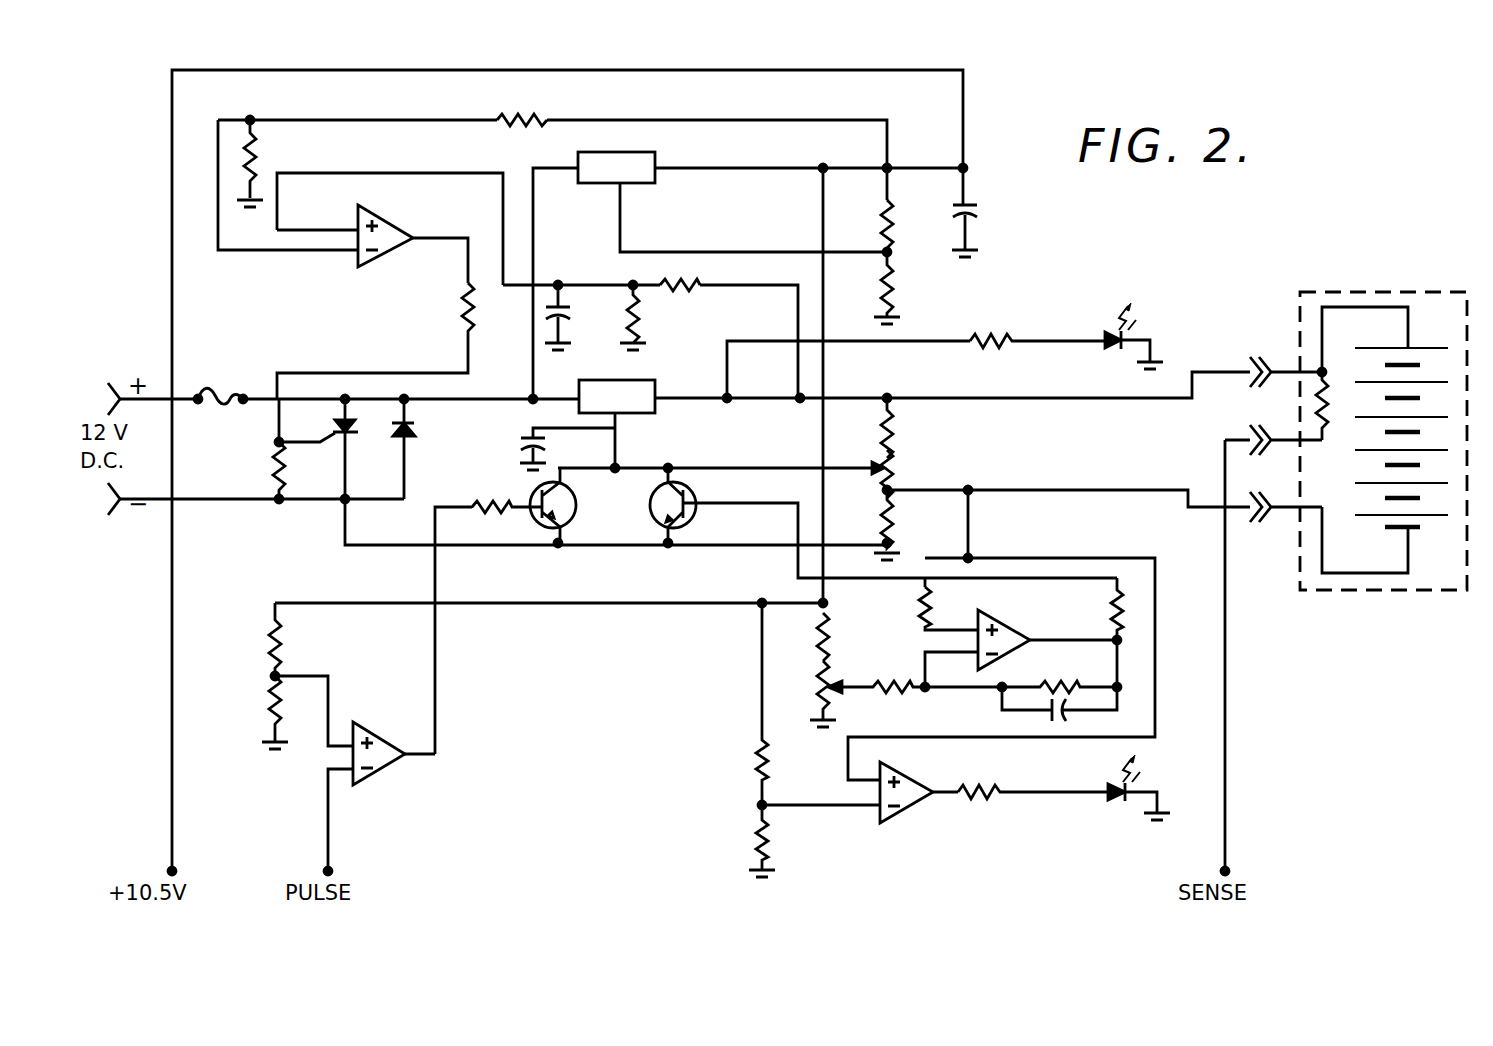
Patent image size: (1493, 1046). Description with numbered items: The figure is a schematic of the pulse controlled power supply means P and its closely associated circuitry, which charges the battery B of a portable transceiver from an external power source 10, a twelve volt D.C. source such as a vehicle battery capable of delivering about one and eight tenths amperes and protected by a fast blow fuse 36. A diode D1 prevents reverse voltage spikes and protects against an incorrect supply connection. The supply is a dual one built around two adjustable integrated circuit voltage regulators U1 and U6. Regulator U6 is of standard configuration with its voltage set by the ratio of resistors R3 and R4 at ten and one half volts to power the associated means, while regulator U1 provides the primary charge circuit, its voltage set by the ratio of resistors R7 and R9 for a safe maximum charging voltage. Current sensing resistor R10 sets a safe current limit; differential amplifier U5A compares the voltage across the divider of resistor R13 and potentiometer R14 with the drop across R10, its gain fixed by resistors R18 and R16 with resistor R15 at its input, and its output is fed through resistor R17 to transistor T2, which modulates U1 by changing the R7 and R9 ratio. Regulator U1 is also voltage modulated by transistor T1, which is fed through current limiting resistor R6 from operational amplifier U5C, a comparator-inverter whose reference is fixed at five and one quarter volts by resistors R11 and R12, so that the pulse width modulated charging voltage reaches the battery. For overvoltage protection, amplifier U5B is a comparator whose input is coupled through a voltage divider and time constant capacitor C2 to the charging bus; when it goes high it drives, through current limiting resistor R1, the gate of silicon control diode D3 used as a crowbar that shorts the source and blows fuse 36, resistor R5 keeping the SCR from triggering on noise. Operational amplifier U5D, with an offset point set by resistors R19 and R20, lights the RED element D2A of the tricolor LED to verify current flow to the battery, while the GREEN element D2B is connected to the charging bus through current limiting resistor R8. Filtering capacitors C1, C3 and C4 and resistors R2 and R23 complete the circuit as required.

The external power source 10 is at (138, 376).
The fast blow fuse 36 is at (218, 386).
The power supply means P is at (1166, 247).
The battery B is at (1406, 276).
The voltage regulator U1 is at (721, 427).
The voltage regulator U6 is at (746, 277).
The differential amplifier U5A is at (1021, 646).
The amplifier U5B is at (390, 229).
The operational amplifier U5C is at (366, 793).
The operational amplifier U5D is at (860, 787).
The transistor T1 is at (569, 505).
The transistor T2 is at (883, 523).
The diode D1 is at (416, 447).
The silicon control diode D3 is at (610, 470).
The RED element D2A is at (1148, 787).
The GREEN element D2B is at (1143, 336).
The filter capacitor C1 is at (985, 227).
The time constant capacitor C2 is at (575, 317).
The filter capacitor C3 is at (1059, 714).
The filter capacitor C4 is at (567, 449).
The current limiting resistor R1 is at (391, 341).
The resistor R2 is at (680, 274).
The resistor R3 is at (903, 226).
The resistor R4 is at (903, 288).
The resistor R5 is at (280, 451).
The current limiting resistor R6 is at (488, 615).
The resistor R7 is at (903, 426).
The current limiting resistor R8 is at (1036, 328).
The resistor R9 is at (907, 474).
The current sensing resistor R10 is at (911, 517).
The resistor R11 is at (311, 674).
The resistor R12 is at (256, 712).
The resistor R13 is at (846, 637).
The potentiometer R14 is at (804, 694).
The resistor R15 is at (920, 608).
The resistor R16 is at (915, 677).
The resistor R17 is at (1094, 609).
The resistor R18 is at (1059, 666).
The resistor R19 is at (786, 706).
The resistor R20 is at (785, 841).
The resistor R23 is at (654, 317).